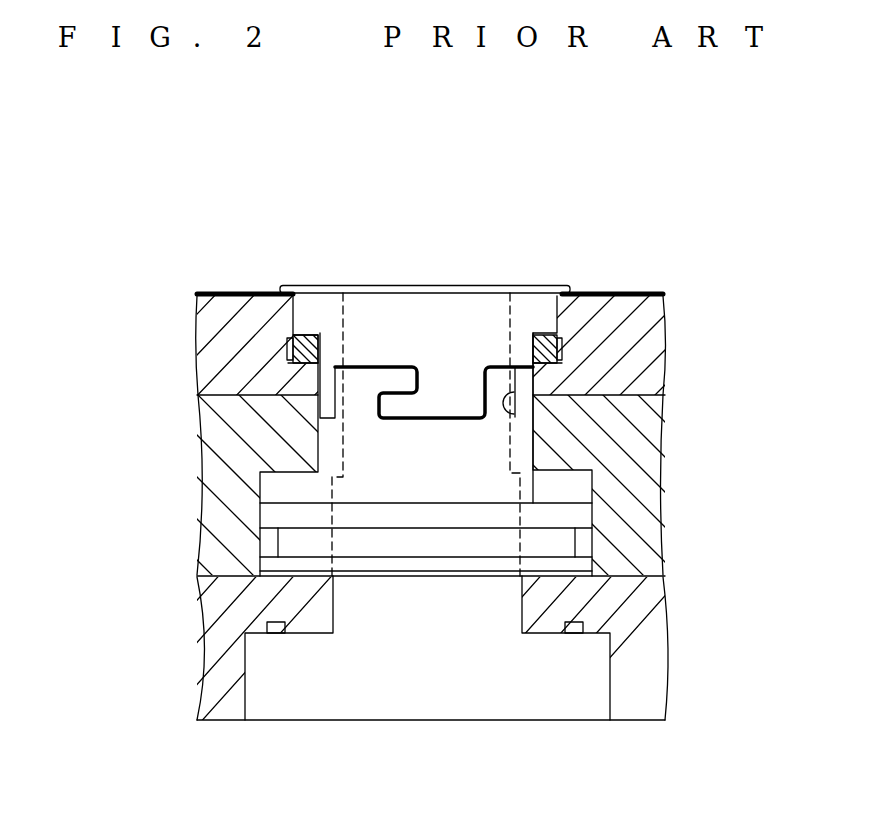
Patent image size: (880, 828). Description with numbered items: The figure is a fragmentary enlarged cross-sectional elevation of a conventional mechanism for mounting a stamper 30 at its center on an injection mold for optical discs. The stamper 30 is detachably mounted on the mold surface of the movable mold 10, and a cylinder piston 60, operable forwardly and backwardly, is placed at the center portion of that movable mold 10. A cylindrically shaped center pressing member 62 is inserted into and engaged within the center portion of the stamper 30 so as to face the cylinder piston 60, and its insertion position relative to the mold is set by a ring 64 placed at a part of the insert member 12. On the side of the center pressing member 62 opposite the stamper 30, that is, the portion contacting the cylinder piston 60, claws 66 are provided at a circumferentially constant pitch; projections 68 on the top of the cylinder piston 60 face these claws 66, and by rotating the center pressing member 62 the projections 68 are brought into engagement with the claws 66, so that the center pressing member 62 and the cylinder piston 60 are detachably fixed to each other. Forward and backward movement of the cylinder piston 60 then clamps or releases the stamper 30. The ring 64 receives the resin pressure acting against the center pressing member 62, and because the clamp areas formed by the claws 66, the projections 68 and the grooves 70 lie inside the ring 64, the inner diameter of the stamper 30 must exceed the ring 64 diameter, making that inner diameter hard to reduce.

The movable mold 10 is at (633, 722).
The insert member 12 is at (625, 370).
The stamper 30 is at (231, 292).
The cylinder piston 60 is at (442, 483).
The center pressing member 62 is at (420, 303).
The ring 64 is at (557, 342).
The claws 66 is at (437, 408).
The projections 68 is at (397, 378).
The grooves 70 is at (505, 410).